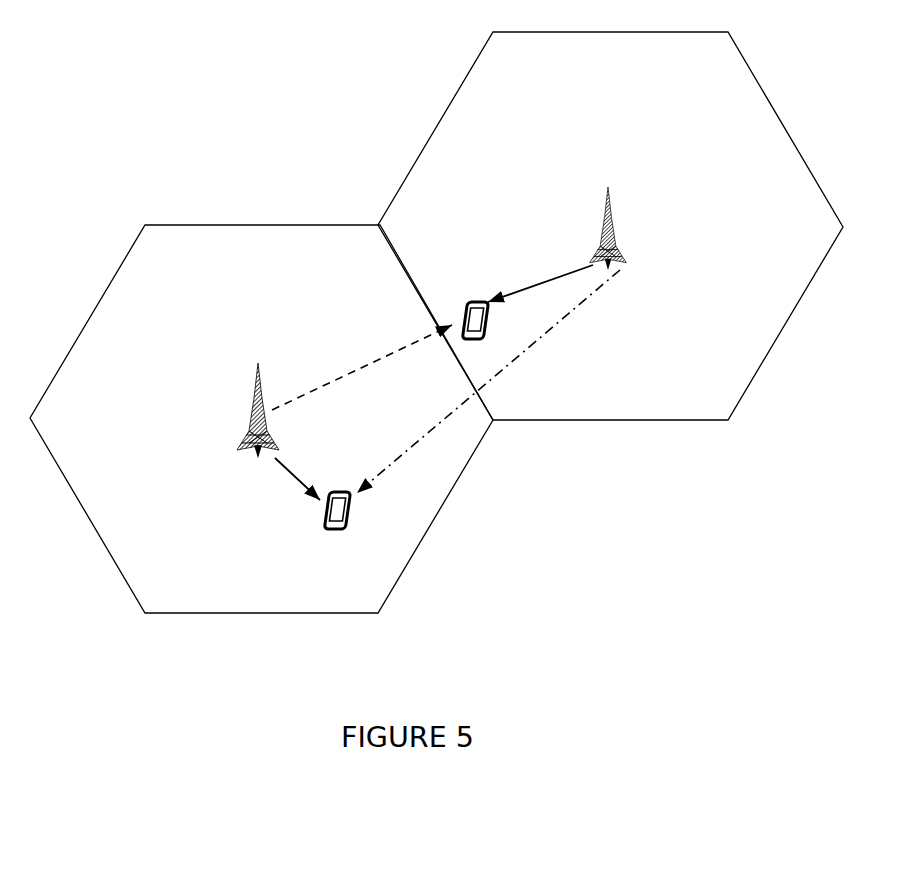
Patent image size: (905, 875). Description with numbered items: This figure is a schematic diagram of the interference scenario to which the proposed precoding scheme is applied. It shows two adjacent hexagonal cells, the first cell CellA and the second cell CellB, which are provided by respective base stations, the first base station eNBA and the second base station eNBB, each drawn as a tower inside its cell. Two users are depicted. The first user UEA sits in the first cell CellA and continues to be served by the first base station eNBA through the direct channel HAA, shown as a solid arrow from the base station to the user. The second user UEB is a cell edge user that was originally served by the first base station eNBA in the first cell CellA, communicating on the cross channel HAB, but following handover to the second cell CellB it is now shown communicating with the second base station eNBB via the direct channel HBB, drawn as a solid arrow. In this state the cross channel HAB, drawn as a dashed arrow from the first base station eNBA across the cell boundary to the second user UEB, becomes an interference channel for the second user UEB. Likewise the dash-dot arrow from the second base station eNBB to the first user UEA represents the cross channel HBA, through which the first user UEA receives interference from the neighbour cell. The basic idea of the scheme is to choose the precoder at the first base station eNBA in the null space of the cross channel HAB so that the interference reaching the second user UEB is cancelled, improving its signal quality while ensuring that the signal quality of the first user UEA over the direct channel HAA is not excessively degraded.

The Cell A CellA is at (261, 402).
The Cell B CellB is at (610, 251).
The base station eNB_A eNBA is at (226, 409).
The base station eNB_B eNBB is at (638, 227).
The user UE_A UEA is at (336, 530).
The user UE_B UEB is at (459, 304).
The channel H_AA HAA is at (281, 484).
The channel H_BB HBB is at (540, 272).
The channel H_AB HAB is at (362, 367).
The channel H_BA HBA is at (488, 381).